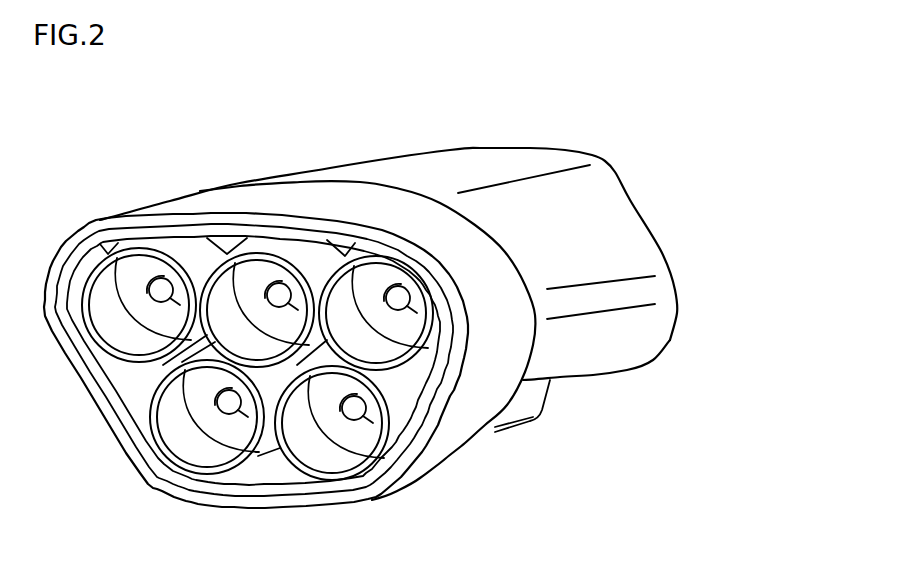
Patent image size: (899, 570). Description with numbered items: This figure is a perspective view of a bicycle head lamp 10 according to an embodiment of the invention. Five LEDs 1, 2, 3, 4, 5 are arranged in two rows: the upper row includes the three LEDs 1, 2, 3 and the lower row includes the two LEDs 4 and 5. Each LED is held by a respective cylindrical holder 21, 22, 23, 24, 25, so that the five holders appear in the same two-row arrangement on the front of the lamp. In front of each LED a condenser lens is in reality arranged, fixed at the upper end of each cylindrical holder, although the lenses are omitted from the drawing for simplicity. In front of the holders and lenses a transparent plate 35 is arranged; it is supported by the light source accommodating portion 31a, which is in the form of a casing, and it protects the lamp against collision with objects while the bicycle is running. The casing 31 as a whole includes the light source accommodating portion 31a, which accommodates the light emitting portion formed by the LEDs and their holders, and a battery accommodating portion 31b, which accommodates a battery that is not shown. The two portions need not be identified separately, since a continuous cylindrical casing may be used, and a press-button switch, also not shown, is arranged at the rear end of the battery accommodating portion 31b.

The connector 10 is at (494, 136).
The transparent plate 35 is at (104, 375).
The cylindrical holder 21 is at (105, 283).
The cylindrical holder 22 is at (228, 283).
The cylindrical holder 23 is at (347, 283).
The cylindrical holder 24 is at (188, 442).
The cylindrical holder 25 is at (310, 443).
The LED 1 is at (160, 290).
The LED 2 is at (279, 295).
The LED 3 is at (398, 298).
The LED 4 is at (229, 402).
The LED 5 is at (354, 408).
The casing 31 is at (572, 435).
The light source accommodating portion 31a is at (479, 428).
The battery accommodating portion 31b is at (580, 367).